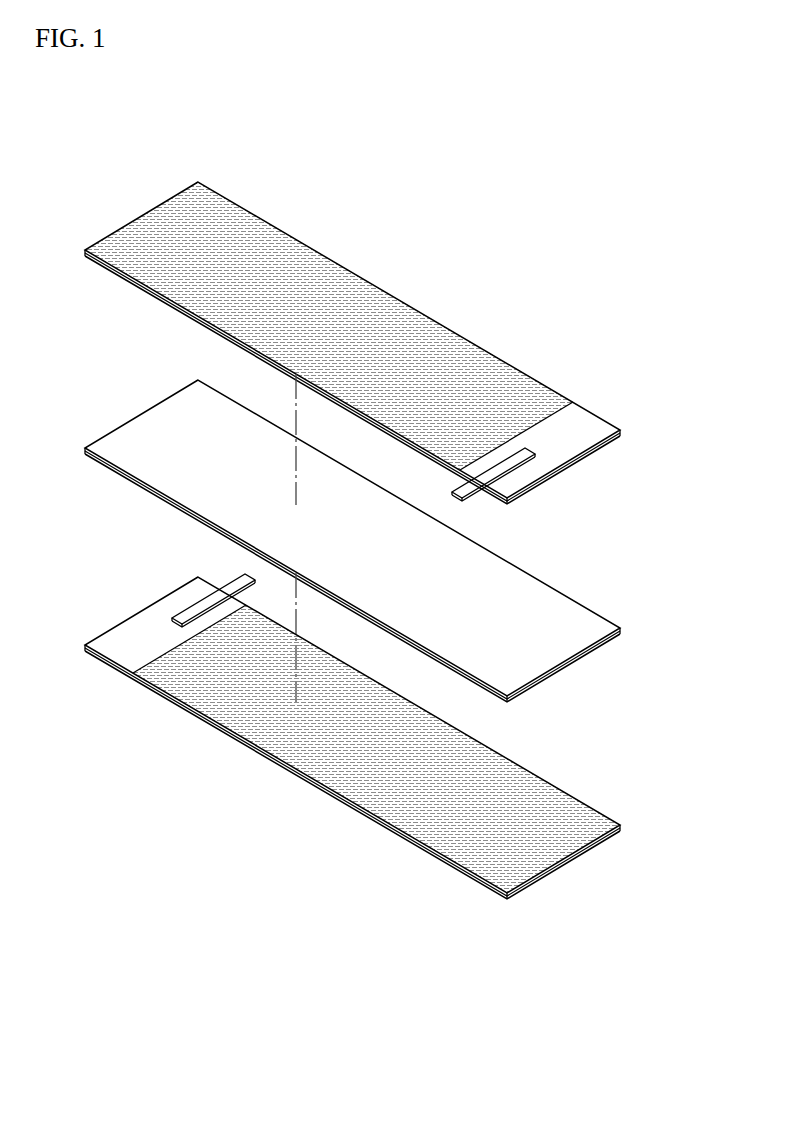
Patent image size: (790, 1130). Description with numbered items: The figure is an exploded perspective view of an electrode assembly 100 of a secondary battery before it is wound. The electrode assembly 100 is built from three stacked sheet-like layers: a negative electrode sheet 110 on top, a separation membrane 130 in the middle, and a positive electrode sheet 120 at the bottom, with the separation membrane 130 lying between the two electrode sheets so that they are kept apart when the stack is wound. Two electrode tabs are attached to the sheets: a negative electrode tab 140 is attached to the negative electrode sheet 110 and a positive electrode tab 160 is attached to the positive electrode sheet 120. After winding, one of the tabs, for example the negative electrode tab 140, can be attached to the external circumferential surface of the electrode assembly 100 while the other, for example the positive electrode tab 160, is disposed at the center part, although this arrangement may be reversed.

The electrode assembly 100 is at (657, 418).
The negative electrode sheet 110 is at (462, 295).
The positive electrode sheet 120 is at (218, 757).
The separation membrane 130 is at (600, 626).
The negative electrode tab 140 is at (480, 494).
The positive electrode tab 160 is at (232, 572).